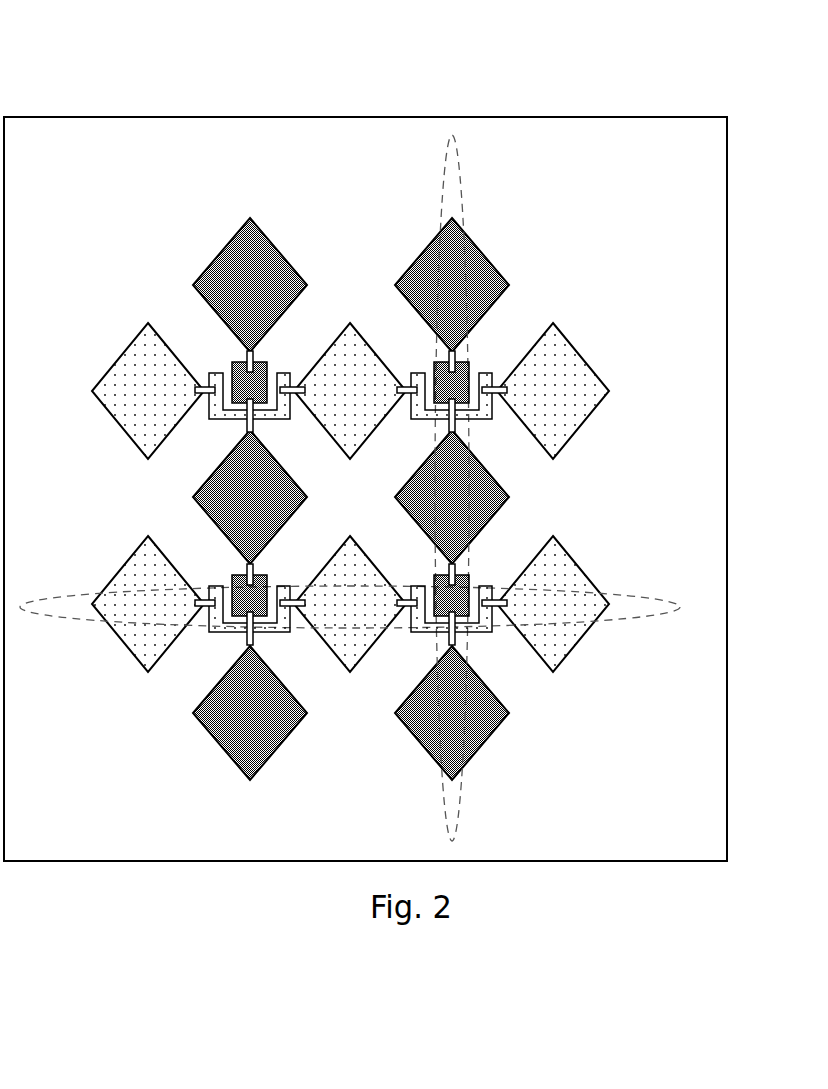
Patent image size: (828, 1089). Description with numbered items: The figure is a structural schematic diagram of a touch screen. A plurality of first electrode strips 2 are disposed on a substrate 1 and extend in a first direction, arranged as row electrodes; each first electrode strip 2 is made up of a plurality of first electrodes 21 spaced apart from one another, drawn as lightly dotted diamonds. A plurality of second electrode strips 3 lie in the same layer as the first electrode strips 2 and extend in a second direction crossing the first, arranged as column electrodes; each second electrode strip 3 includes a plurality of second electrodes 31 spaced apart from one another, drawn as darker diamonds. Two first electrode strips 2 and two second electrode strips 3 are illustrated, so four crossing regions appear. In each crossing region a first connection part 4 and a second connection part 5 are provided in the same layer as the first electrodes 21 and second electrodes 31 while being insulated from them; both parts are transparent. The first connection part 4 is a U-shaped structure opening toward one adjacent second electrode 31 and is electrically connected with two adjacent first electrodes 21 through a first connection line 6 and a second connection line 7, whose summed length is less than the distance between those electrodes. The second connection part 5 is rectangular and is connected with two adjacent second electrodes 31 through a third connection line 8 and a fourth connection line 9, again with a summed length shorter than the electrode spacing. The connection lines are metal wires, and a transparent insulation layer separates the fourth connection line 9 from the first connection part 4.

The substrate 1 is at (717, 229).
The first electrode strip 2 is at (665, 607).
The second electrode strip 3 is at (463, 176).
The first connection part 4 is at (282, 373).
The second connection part 5 is at (254, 365).
The first connection line 6 is at (207, 387).
The second connection line 7 is at (293, 396).
The third connection line 8 is at (246, 363).
The fourth connection line 9 is at (253, 420).
The first electrode 21 is at (158, 349).
The second electrode 31 is at (279, 283).